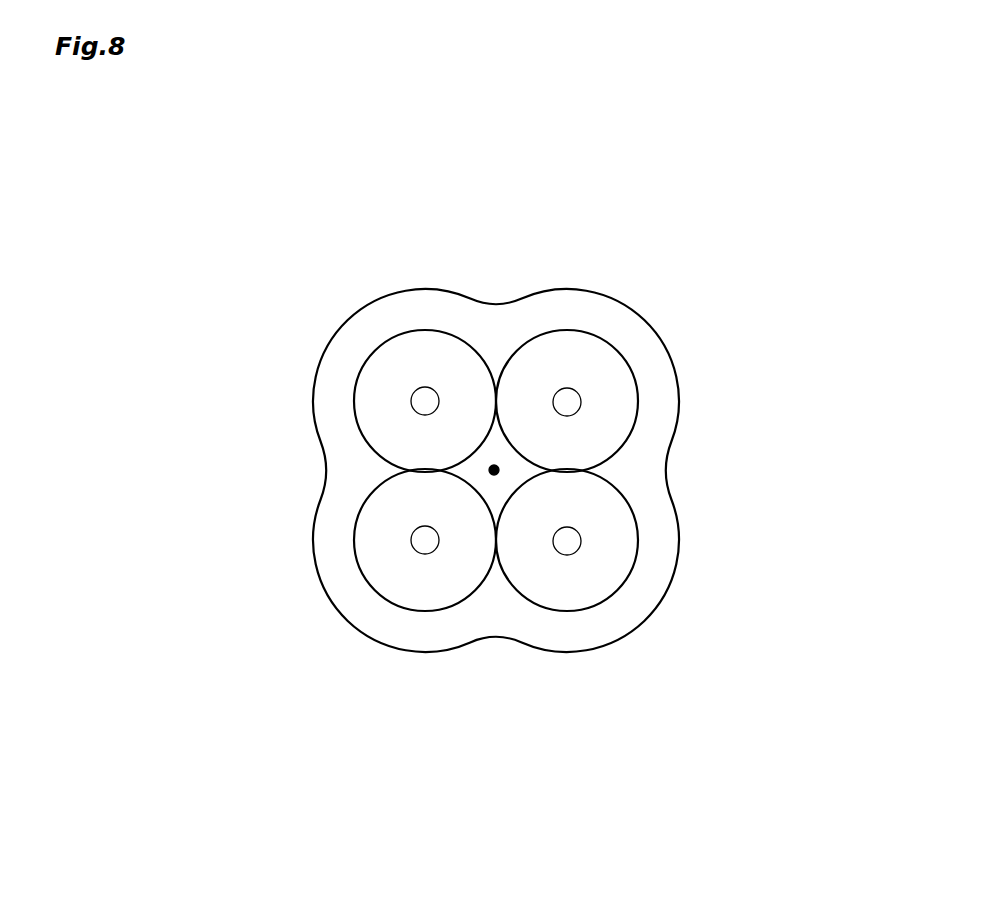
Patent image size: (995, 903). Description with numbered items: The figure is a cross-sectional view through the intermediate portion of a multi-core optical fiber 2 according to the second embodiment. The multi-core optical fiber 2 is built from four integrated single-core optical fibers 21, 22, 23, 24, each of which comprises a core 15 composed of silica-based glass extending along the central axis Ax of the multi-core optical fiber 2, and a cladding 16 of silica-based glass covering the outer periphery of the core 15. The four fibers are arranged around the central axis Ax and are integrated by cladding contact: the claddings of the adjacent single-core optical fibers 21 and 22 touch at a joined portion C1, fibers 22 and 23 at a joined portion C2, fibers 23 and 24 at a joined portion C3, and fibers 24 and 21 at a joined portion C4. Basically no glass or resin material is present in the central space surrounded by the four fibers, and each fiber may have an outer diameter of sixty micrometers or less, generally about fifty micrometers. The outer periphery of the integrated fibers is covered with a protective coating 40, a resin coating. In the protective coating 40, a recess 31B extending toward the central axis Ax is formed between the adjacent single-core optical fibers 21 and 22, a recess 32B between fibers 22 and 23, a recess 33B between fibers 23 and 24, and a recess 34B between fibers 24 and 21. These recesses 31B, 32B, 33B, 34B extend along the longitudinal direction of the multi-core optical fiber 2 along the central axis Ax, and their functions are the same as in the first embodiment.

The multi-core optical fiber 2 is at (660, 186).
The protective coating 40 is at (420, 288).
The recess 31B is at (495, 302).
The recess 32B is at (665, 478).
The recess 33B is at (500, 638).
The recess 34B is at (325, 475).
The single-core optical fiber 21 is at (348, 428).
The single-core optical fiber 22 is at (566, 322).
The single-core optical fiber 23 is at (640, 535).
The single-core optical fiber 24 is at (345, 532).
The core 15 is at (428, 405).
The cladding 16 is at (468, 368).
The joined portion C1 is at (494, 402).
The joined portion C2 is at (563, 468).
The joined portion C3 is at (497, 538).
The joined portion C4 is at (425, 472).
The central axis Ax is at (494, 470).